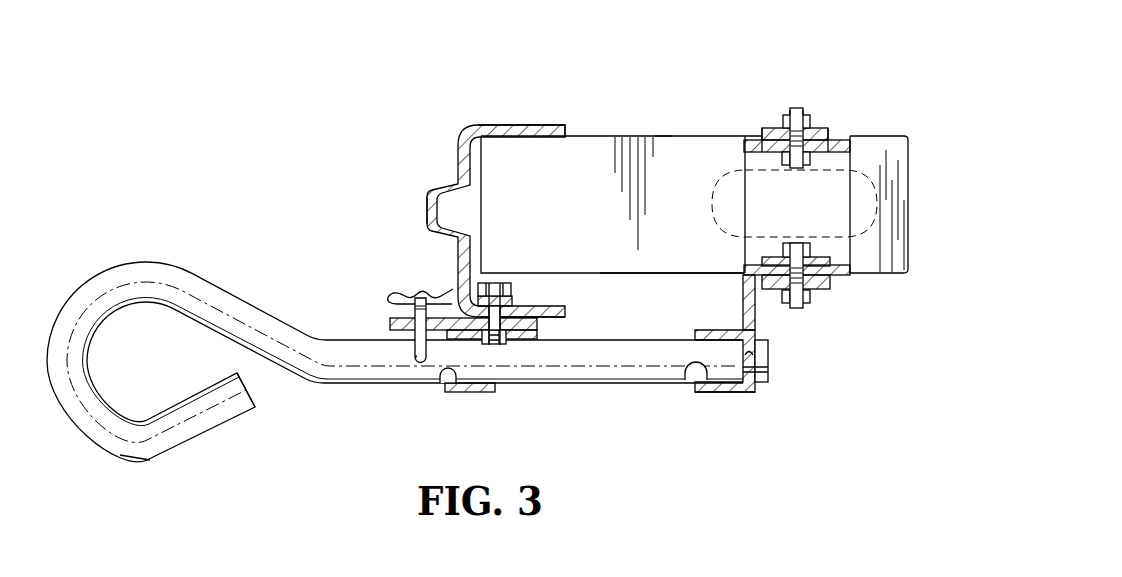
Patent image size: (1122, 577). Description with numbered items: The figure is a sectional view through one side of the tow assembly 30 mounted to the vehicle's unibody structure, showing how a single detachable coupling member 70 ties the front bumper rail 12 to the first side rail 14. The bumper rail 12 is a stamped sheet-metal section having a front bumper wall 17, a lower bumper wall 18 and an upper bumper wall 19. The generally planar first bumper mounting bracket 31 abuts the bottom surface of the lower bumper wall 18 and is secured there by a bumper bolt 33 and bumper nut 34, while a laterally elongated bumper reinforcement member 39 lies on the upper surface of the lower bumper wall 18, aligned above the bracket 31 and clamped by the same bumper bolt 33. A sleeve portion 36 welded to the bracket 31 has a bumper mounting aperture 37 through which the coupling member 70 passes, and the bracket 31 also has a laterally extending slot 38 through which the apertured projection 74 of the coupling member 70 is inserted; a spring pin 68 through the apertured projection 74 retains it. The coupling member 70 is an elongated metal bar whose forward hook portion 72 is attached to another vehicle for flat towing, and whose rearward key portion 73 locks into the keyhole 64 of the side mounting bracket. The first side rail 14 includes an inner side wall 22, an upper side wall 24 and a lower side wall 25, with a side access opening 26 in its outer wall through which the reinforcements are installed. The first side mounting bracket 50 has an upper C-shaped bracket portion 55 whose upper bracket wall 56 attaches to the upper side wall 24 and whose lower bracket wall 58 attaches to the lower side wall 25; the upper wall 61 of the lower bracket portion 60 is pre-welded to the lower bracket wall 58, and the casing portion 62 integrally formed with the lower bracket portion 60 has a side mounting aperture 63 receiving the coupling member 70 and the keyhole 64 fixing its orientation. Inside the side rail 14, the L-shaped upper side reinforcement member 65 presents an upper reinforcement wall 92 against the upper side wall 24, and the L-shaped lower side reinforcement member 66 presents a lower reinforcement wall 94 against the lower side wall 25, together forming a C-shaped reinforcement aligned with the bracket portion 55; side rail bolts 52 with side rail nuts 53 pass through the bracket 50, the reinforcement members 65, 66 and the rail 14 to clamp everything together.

The front bumper rail 12 is at (457, 146).
The first side rail 14 is at (663, 134).
The front bumper wall 17 is at (428, 199).
The lower bumper wall 18 is at (558, 312).
The upper bumper wall 19 is at (505, 130).
The inner side wall 22 is at (581, 150).
The upper side wall 24 is at (638, 135).
The lower side wall 25 is at (640, 276).
The side access opening 26 is at (832, 152).
The tow assembly 30 is at (101, 258).
The first bumper mounting bracket 31 is at (390, 323).
The bumper bolt 33 is at (488, 286).
The bumper nut 34 is at (508, 336).
The sleeve portion 36 is at (482, 390).
The bumper mounting aperture 37 is at (447, 380).
The laterally extending slot 38 is at (418, 330).
The bumper reinforcement member 39 is at (515, 300).
The first side mounting bracket 50 is at (759, 333).
The side rail bolt 52 is at (795, 112).
The side rail nut 53 is at (805, 118).
The upper C-shaped bracket portion 55 is at (768, 125).
The upper bracket wall 56 is at (765, 135).
The lower bracket wall 58 is at (832, 281).
The lower bracket portion 60 is at (755, 397).
The upper wall 61 is at (756, 281).
The casing portion 62 is at (727, 397).
The side mounting aperture 63 is at (693, 364).
The keyhole 64 is at (768, 360).
The upper side reinforcement member 65 is at (826, 148).
The lower side reinforcement member 66 is at (760, 258).
The spring pin 68 is at (385, 294).
The first detachable coupling member 70 is at (203, 443).
The forward hook portion 72 is at (133, 448).
The rearward key portion 73 is at (763, 385).
The apertured projection 74 is at (420, 362).
The upper reinforcement wall 92 is at (760, 151).
The lower reinforcement wall 94 is at (824, 258).